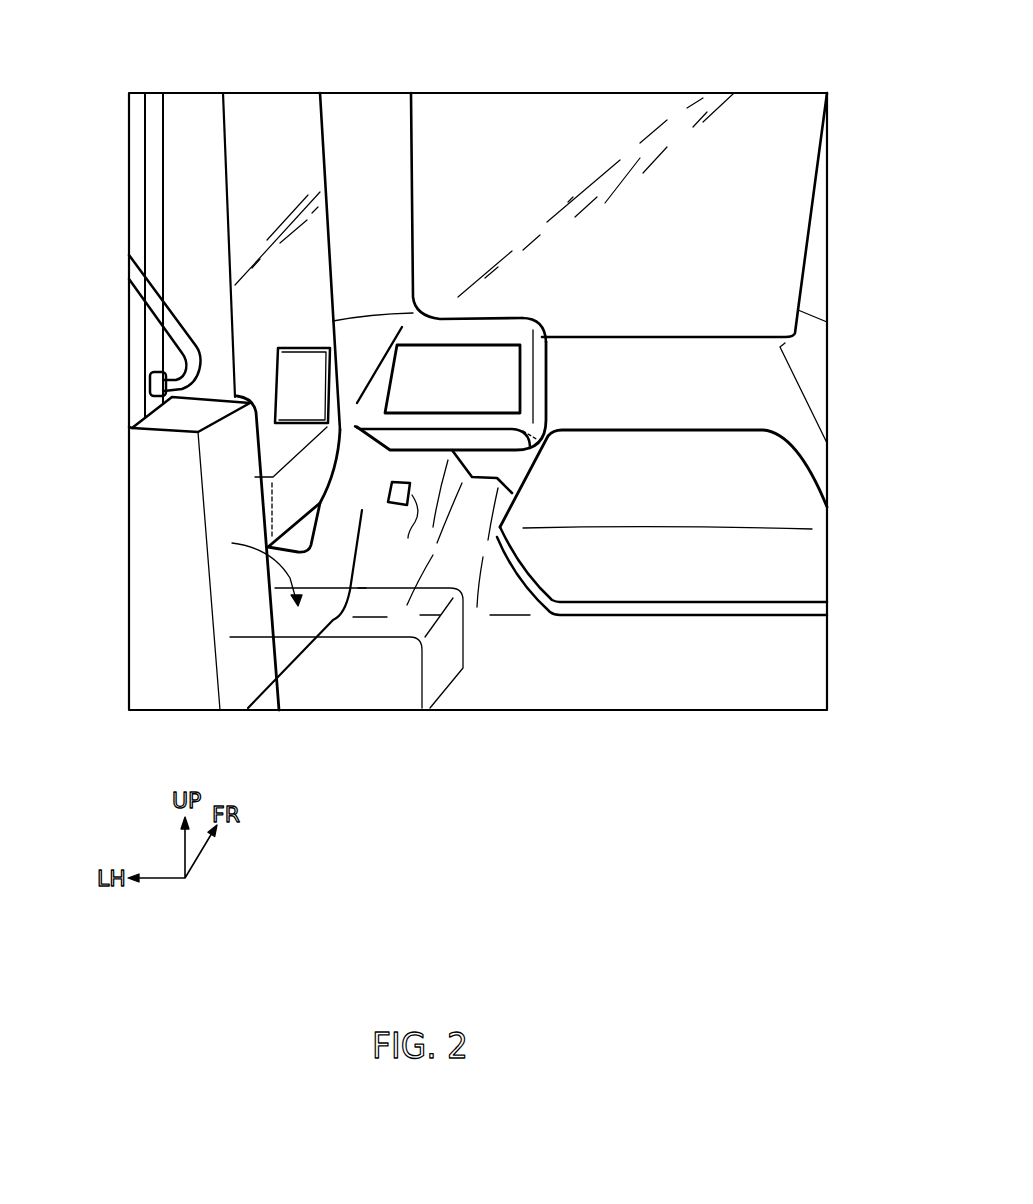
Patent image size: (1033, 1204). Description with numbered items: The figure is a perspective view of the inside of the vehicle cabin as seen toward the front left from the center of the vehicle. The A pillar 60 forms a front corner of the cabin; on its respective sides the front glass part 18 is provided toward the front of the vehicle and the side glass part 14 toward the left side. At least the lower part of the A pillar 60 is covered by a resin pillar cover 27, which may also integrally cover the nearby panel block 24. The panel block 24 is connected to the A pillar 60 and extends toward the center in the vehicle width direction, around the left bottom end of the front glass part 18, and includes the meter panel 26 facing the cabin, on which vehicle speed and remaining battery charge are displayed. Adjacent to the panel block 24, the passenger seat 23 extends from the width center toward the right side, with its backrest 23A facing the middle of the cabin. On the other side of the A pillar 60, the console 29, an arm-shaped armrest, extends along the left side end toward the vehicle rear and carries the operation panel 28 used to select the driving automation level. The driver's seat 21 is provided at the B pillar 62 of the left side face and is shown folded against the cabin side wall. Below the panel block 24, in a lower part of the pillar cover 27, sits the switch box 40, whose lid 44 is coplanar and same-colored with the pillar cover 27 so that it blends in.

The side glass part 14 is at (290, 135).
The A pillar 60 is at (392, 155).
The front glass part 18 is at (585, 117).
The pillar cover 27 is at (366, 336).
The meter panel 26 is at (480, 360).
The panel block 24 is at (538, 383).
The passenger seat 23 is at (662, 484).
The backrest 23A is at (704, 457).
The operation panel 28 is at (300, 373).
The console 29 is at (283, 446).
The driver's seat 21 is at (182, 413).
The B pillar 62 is at (140, 348).
The switch box 40 is at (386, 491).
The lid 44 is at (400, 534).